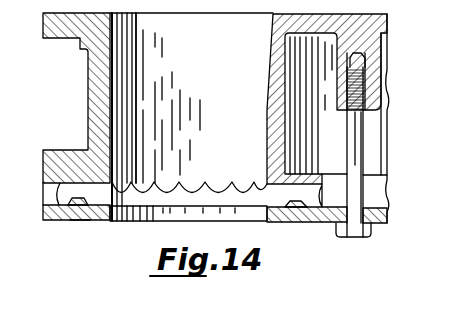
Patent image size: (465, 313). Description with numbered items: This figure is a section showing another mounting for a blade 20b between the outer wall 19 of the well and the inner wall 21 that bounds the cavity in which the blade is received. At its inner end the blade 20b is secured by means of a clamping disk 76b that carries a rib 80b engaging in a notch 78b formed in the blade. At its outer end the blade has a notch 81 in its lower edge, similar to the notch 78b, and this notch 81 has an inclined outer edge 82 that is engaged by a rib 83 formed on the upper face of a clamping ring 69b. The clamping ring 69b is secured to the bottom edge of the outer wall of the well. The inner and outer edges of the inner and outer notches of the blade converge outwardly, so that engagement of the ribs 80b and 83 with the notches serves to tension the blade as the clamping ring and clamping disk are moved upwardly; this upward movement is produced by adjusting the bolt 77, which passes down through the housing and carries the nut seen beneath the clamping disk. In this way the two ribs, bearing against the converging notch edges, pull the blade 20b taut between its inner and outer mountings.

The housing body 19 is at (88, 98).
The cover member 21 is at (267, 72).
The blade 20b is at (199, 193).
The bolt 77 is at (358, 126).
The notch 81 is at (90, 201).
The inclined outer edge 82 is at (77, 220).
The rib 83 is at (79, 220).
The notch 78b is at (285, 203).
The clamping ring 69b is at (46, 220).
The rib 80b is at (301, 223).
The clamping disk 76b is at (382, 223).